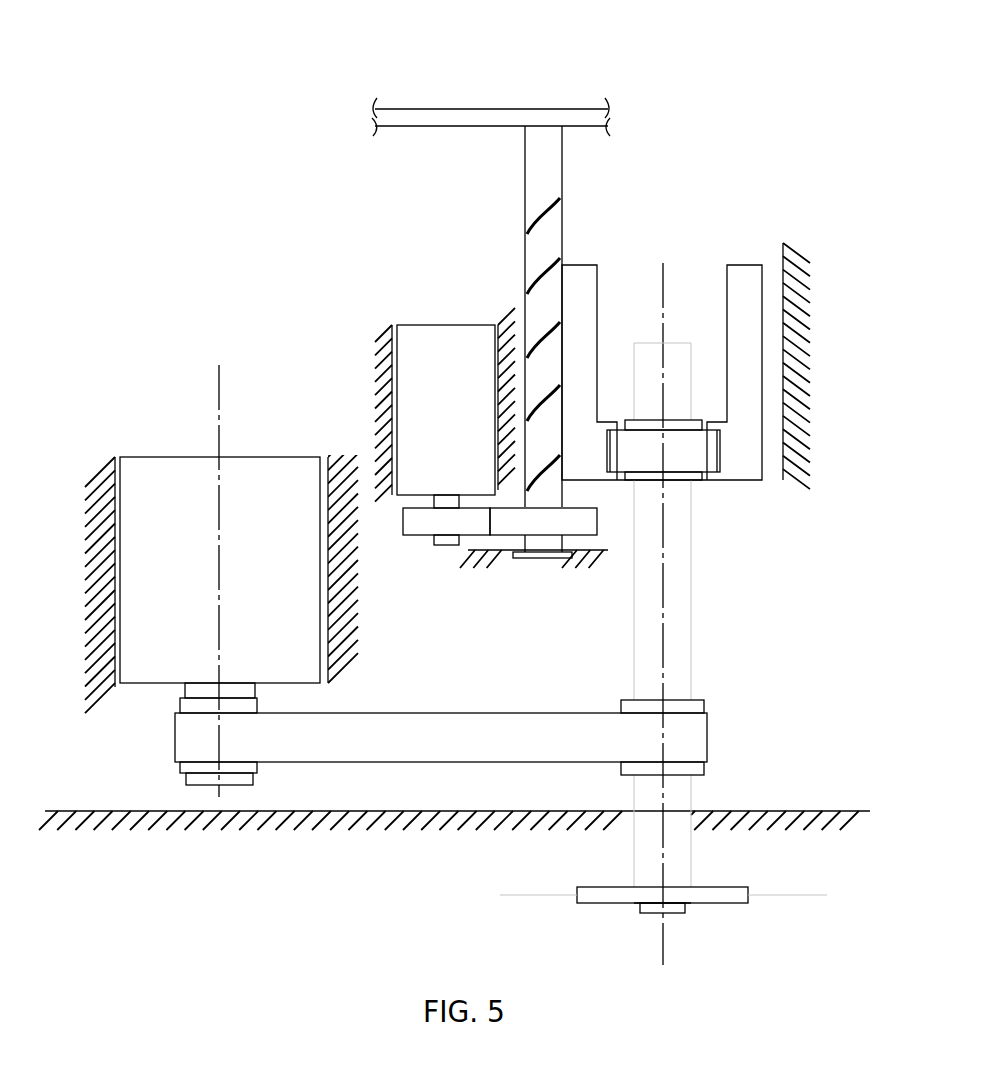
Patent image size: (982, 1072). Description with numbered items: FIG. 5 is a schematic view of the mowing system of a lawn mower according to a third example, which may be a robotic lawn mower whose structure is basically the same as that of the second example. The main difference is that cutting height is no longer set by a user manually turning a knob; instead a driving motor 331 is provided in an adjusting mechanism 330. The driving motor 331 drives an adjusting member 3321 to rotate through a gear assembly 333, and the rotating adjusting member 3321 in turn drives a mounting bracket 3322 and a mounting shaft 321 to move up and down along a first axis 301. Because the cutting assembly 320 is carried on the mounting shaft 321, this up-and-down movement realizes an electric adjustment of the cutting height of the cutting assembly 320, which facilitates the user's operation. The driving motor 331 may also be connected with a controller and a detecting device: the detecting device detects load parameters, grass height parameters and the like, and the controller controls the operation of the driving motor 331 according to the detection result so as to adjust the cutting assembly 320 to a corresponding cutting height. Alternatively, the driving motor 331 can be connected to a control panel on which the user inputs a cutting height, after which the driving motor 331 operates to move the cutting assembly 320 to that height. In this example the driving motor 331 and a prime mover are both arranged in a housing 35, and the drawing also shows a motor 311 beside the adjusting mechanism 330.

The housing 35 is at (410, 109).
The adjusting member 3321 is at (542, 275).
The adjusting mechanism 330 is at (417, 317).
The driving motor 331 is at (413, 393).
The gear assembly 333 is at (487, 527).
The mounting bracket 3322 is at (757, 268).
The first axis 301 is at (663, 268).
The mounting shaft 321 is at (685, 553).
The cutting assembly 320 is at (585, 898).
The drive motor 311 is at (158, 495).